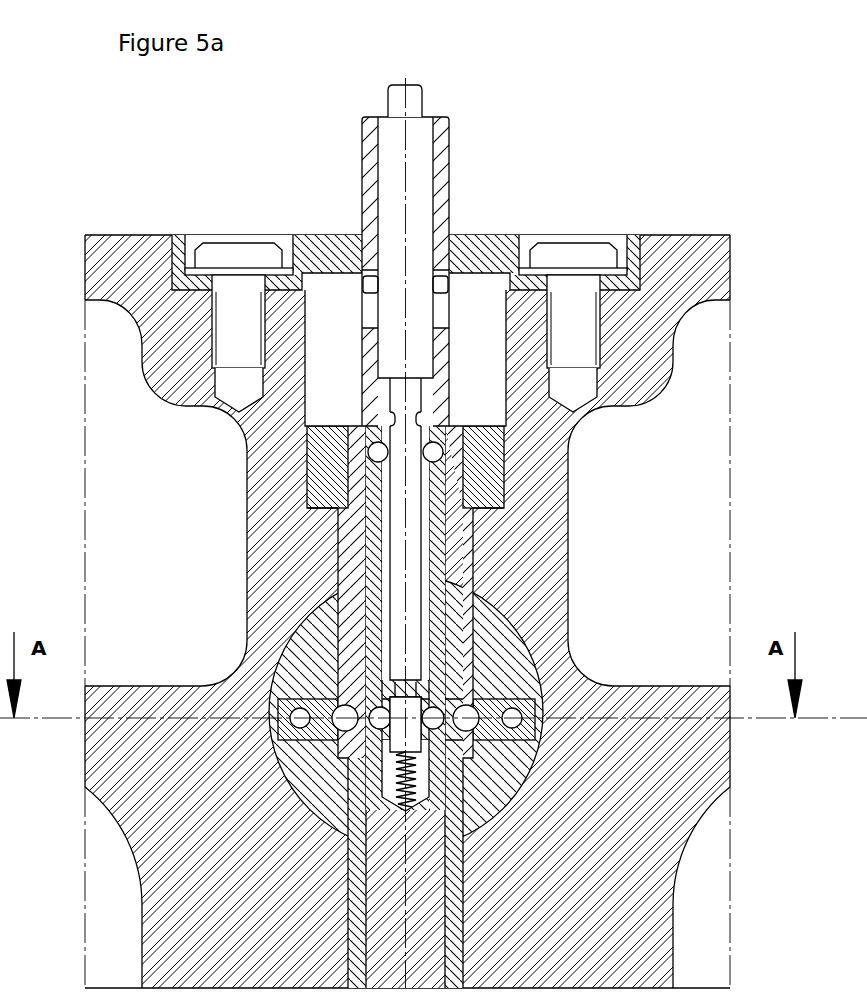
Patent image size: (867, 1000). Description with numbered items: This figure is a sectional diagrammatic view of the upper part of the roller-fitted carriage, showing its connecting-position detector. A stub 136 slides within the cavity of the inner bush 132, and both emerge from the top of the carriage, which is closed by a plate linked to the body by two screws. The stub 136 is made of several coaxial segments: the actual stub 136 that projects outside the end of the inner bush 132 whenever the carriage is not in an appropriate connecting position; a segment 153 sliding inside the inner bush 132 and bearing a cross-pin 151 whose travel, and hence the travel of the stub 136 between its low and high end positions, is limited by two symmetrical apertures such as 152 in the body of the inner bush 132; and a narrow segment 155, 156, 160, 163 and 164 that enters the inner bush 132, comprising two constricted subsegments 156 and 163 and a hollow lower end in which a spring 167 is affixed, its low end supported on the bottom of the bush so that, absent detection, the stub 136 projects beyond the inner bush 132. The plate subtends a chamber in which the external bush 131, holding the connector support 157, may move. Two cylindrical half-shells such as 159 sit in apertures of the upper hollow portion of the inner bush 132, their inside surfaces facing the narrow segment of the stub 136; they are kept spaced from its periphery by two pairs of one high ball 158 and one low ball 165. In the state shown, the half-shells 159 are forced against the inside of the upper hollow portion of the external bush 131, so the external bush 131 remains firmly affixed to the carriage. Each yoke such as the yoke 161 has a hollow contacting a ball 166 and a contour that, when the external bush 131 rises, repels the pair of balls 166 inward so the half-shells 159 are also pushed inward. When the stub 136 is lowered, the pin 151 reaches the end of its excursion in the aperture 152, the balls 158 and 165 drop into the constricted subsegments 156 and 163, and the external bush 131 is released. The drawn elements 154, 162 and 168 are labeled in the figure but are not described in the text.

The external bush 131 is at (462, 542).
The inner bush 132 is at (447, 120).
The stub 136 is at (422, 95).
The cross-pin 151 is at (449, 237).
The aperture 152 is at (449, 308).
The segment of the stub 153 is at (385, 188).
The pocket 154 is at (325, 282).
The segment of the stub 155 is at (392, 388).
The constricted subsegment 156 is at (393, 418).
The connector support 157 is at (318, 447).
The high ball 158 is at (367, 453).
The half-shell 159 is at (307, 512).
The segment of the stub 160 is at (393, 528).
The yoke 161 is at (282, 673).
The bearing cage 162 is at (278, 700).
The constricted subsegment 163 is at (477, 535).
The segment of the stub 164 is at (483, 612).
The low ball 165 is at (480, 640).
The ball 166 is at (470, 700).
The spring 167 is at (523, 767).
The spring 168 is at (432, 790).